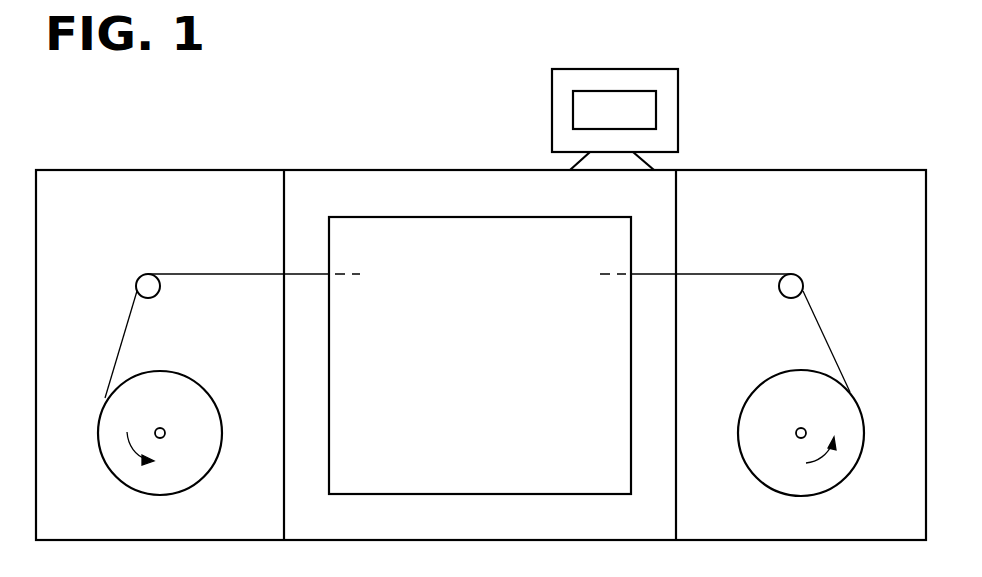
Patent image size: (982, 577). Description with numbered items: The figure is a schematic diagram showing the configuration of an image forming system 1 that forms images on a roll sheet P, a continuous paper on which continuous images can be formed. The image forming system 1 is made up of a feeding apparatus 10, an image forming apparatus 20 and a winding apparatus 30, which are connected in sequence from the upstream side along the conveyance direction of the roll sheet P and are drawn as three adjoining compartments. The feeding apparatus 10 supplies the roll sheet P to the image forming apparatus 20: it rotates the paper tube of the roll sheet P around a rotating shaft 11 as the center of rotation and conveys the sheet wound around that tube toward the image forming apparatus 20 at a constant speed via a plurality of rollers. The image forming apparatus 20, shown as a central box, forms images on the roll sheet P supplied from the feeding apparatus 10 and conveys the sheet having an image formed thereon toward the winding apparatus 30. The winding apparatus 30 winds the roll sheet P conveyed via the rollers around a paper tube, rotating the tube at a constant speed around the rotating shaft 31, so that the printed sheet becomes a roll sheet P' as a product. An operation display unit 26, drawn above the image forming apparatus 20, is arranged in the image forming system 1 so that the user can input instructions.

The image forming system 1 is at (268, 115).
The feeding apparatus 10 is at (880, 168).
The rotating shaft 11 is at (809, 426).
The image forming apparatus 20 is at (334, 168).
The operation display unit 26 is at (644, 67).
The winding apparatus 30 is at (66, 168).
The rotating shaft 31 is at (166, 426).
The roll sheet P is at (763, 353).
The roll sheet P' is at (224, 374).